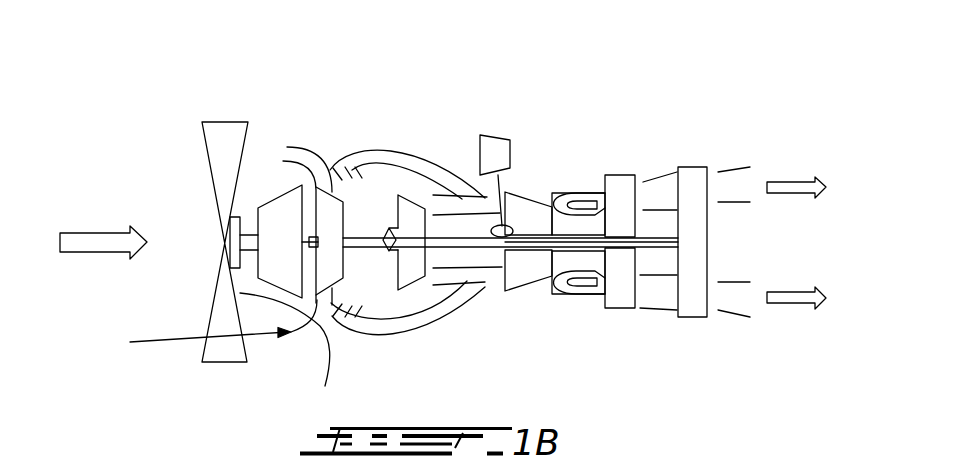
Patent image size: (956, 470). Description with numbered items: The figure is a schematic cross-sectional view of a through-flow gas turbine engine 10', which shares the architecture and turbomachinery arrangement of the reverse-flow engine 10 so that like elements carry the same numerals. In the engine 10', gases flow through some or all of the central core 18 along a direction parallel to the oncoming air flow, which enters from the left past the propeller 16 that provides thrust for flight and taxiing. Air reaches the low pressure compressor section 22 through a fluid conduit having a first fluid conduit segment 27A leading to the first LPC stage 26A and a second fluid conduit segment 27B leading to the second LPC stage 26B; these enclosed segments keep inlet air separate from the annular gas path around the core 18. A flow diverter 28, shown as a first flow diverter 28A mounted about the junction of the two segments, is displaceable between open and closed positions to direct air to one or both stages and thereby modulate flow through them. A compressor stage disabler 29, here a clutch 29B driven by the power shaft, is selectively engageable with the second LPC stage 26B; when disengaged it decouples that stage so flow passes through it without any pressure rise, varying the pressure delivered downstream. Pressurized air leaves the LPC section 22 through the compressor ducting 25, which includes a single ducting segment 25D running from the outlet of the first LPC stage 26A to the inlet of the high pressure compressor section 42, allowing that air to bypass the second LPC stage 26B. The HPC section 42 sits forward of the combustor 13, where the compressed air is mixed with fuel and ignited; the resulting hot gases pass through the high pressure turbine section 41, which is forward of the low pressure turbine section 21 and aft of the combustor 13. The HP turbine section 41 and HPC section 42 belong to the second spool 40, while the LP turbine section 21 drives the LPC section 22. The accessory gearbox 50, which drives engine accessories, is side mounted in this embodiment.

The gas turbine engine 10' is at (443, 219).
The gas turbine engine 10 is at (443, 219).
The propeller 16 is at (223, 142).
The low pressure compressor section 22 is at (358, 214).
The first LPC stage 26A is at (330, 167).
The second LPC stage 26B is at (415, 210).
The first fluid conduit segment 27A is at (262, 293).
The second fluid conduit segment 27B is at (350, 168).
The compressor ducting 25 is at (444, 160).
The single ducting segment 25D is at (463, 306).
The flow diverter 28 is at (225, 348).
The first flow diverter 28A is at (320, 355).
The compressor stage disabler 29 is at (382, 340).
The clutch 29B is at (342, 315).
The accessory gearbox 50 is at (496, 133).
The high pressure compressor section 42 is at (528, 197).
The combustor 13 is at (583, 187).
The high pressure turbine section 41 is at (620, 175).
The second spool 40 is at (548, 289).
The central core 18 is at (482, 257).
The low pressure turbine section 21 is at (693, 167).